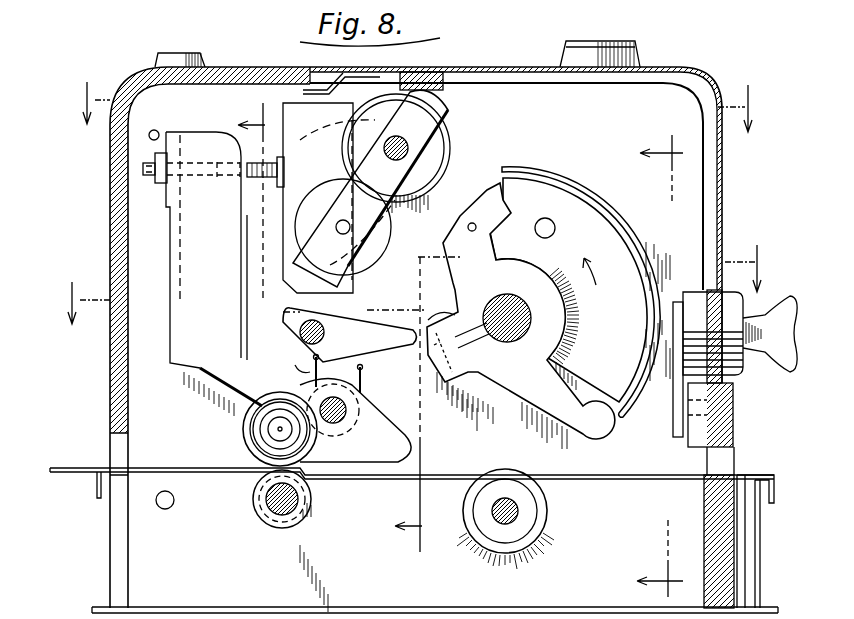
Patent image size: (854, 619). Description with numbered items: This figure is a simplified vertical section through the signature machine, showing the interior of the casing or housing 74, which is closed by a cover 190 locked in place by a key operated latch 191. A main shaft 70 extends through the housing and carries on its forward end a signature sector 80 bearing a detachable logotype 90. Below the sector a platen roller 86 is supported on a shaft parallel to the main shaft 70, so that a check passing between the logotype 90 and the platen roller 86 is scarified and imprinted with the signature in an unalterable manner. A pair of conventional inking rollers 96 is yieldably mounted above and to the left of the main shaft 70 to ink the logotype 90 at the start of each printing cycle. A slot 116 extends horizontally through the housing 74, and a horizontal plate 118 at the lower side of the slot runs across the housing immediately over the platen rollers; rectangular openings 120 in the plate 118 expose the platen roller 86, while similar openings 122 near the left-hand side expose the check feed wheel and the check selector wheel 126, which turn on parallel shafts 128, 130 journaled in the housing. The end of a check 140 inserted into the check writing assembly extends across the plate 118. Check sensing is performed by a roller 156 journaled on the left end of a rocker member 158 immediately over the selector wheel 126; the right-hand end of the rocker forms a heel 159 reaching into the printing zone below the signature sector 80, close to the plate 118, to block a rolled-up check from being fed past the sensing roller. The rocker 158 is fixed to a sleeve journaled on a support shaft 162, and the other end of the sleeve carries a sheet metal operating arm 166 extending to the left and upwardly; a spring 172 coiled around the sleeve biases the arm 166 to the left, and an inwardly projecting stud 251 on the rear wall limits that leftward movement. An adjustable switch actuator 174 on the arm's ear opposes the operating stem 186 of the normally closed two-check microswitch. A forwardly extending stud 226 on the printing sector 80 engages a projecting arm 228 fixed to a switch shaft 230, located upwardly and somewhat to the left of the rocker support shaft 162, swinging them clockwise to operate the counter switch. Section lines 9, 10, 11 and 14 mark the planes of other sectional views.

The housing 74 is at (115, 220).
The slot 116 is at (112, 443).
The cover 190 is at (720, 208).
The horizontal plate 118 is at (180, 468).
The check 140 is at (72, 474).
The operating arm 166 is at (202, 330).
The switch actuator 174 is at (143, 168).
The operating stem 186 is at (240, 188).
The inwardly projecting stud 251 is at (159, 130).
The inking rollers 96 is at (411, 214).
The signature sector 80 is at (618, 337).
The logotype 90 is at (620, 416).
The stud 226 is at (556, 231).
The heel 159 is at (388, 433).
The main shaft 70 is at (505, 342).
The projecting arm 228 is at (380, 326).
The switch shaft 230 is at (325, 334).
The rocker member 158 is at (295, 390).
The support shaft 162 is at (345, 438).
The spring 172 is at (305, 374).
The roller 156 is at (256, 423).
The openings 122 is at (312, 486).
The check selector wheel 126 is at (303, 522).
The shaft 130 is at (278, 503).
The shaft 128 is at (172, 508).
The rectangular openings 120 is at (542, 485).
The platen roller 86 is at (546, 528).
The key operated latch 191 is at (694, 300).
The section line 10 is at (418, 107).
The section line 11 is at (416, 284).
The section line 9 is at (660, 367).
The section line 14 is at (339, 327).